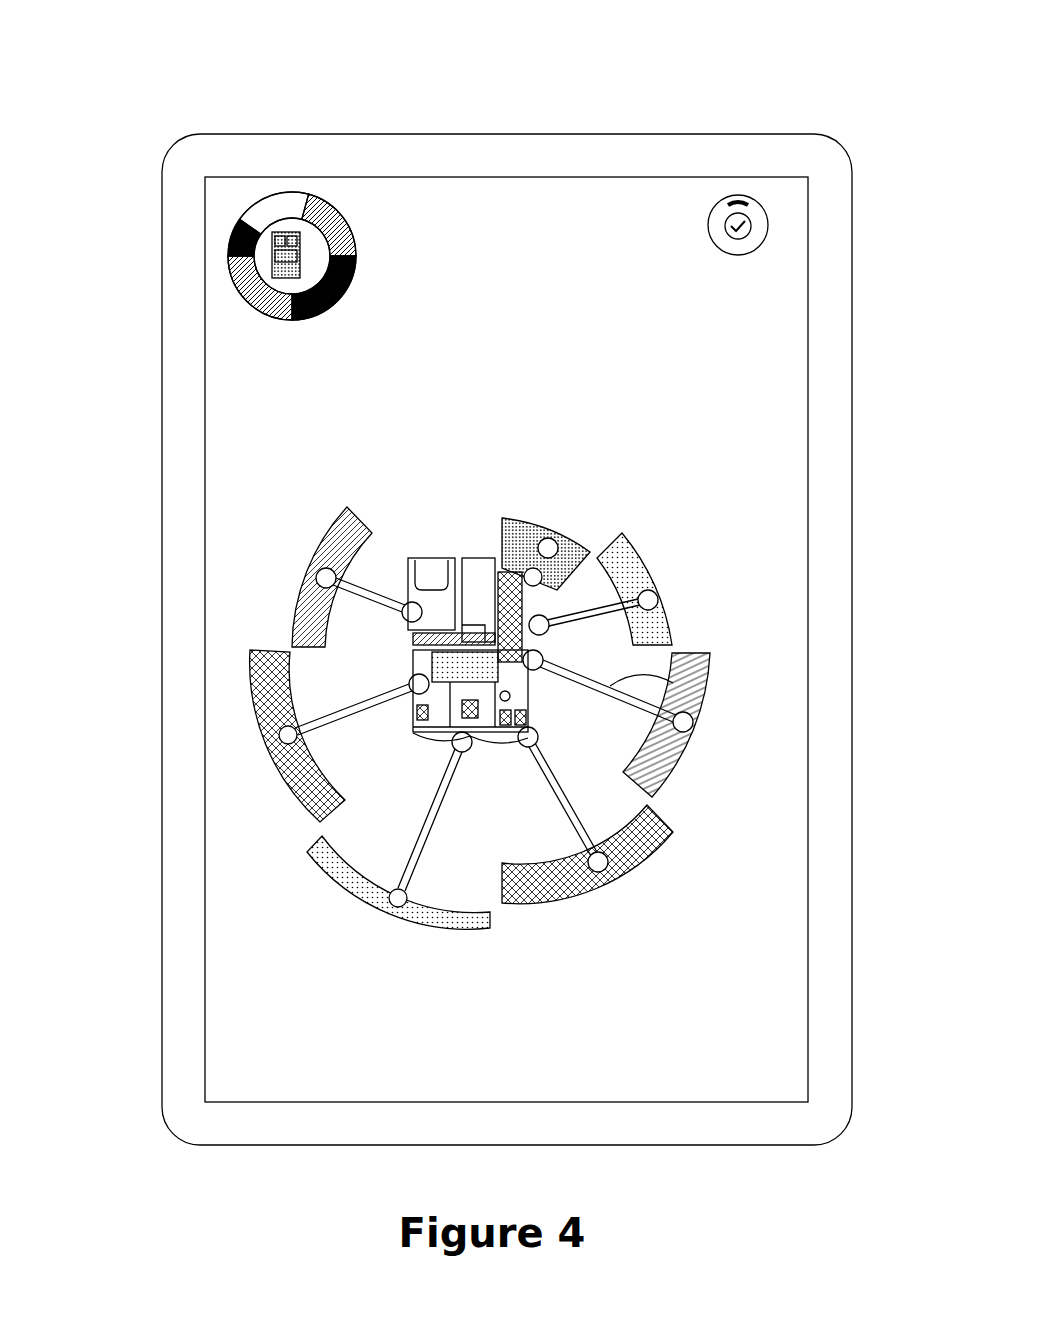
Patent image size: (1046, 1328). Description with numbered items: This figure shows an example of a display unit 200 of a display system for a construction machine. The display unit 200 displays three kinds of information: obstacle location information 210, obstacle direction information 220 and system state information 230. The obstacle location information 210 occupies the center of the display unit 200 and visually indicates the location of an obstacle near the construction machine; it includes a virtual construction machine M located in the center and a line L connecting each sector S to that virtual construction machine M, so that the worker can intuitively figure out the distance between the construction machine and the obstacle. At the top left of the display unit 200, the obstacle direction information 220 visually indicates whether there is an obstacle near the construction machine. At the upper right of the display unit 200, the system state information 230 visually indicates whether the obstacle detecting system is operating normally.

The display unit 200 is at (520, 133).
The obstacle location information 210 is at (587, 668).
The obstacle direction information 220 is at (233, 228).
The system state information 230 is at (770, 214).
The virtual construction machine M is at (475, 557).
The sector S is at (556, 548).
The line L is at (692, 690).